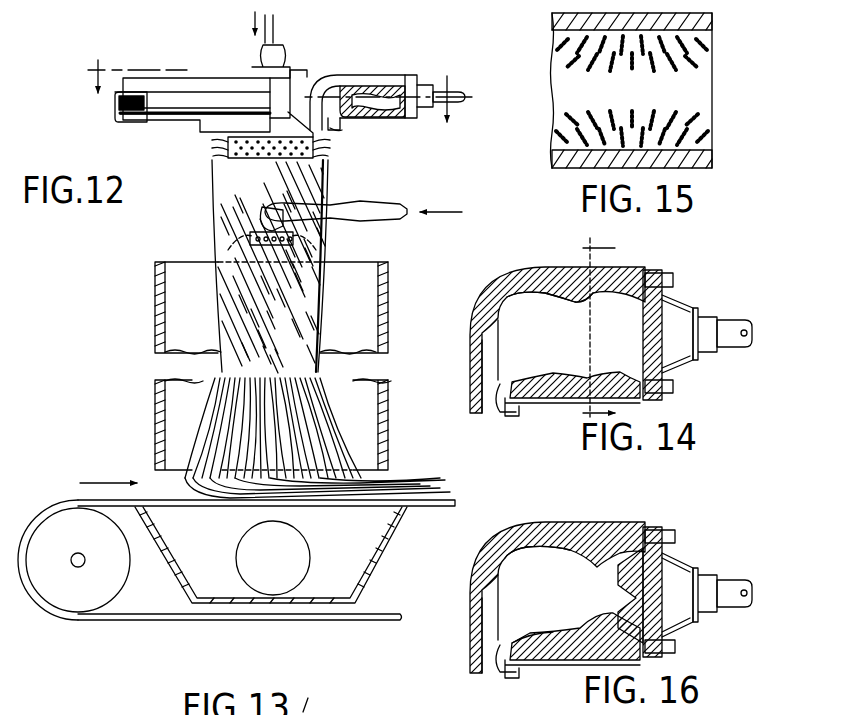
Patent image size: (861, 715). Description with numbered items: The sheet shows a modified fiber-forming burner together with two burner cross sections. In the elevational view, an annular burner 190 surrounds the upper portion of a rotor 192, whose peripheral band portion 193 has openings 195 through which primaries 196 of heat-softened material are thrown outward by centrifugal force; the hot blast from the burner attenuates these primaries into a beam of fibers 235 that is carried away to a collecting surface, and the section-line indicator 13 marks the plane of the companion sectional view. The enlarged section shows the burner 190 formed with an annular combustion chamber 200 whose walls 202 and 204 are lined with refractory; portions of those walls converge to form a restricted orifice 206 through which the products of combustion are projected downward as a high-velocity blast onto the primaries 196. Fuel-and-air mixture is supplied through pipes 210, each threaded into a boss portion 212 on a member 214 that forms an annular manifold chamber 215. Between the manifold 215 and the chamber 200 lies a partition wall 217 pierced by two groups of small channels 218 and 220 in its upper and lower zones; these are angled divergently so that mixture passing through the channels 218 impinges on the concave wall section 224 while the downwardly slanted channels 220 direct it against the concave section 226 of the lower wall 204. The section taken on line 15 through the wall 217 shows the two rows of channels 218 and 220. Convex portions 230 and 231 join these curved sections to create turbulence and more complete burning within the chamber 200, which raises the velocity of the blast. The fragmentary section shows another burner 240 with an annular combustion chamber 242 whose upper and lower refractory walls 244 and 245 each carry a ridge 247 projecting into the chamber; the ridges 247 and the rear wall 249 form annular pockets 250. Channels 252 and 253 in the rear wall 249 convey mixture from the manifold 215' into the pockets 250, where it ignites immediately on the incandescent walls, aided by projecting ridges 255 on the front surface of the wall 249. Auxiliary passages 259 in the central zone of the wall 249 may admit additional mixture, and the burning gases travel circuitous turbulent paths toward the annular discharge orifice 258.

In FIG. 12, the section line 13- 13 is at (274, 79).
In FIG. 12, the member 214 is at (246, 95).
In FIG. 14, the member 214 is at (696, 362).
In FIG. 12, the pipes 210 is at (118, 110).
In FIG. 14, the pipes 210 is at (733, 346).
In FIG. 16, the pipes 210 is at (735, 606).
In FIG. 12, the restricted passage or orifice 206 is at (328, 80).
In FIG. 14, the restricted passage or orifice 206 is at (488, 414).
In FIG. 12, the combustion chamber 200 is at (346, 94).
In FIG. 14, the combustion chamber 200 is at (563, 343).
In FIG. 12, the annular burner 190 is at (423, 62).
In FIG. 14, the annular burner 190 is at (520, 266).
In FIG. 12, the primaries 196 is at (334, 130).
In FIG. 12, the rotor 192 is at (322, 168).
In FIG. 12, the openings 195 is at (236, 160).
In FIG. 12, the peripheral band portion 193 is at (217, 204).
In FIG. 12, the beam of fibers 235 is at (321, 282).
In FIG. 15, the wall 202 is at (552, 22).
In FIG. 14, the wall 202 is at (478, 312).
In FIG. 15, the wall 204 is at (552, 160).
In FIG. 14, the wall 204 is at (510, 412).
In FIG. 15, the openings or channels 218 is at (702, 52).
In FIG. 14, the openings or channels 218 is at (680, 300).
In FIG. 15, the wall or partition 217 is at (703, 90).
In FIG. 14, the wall or partition 217 is at (645, 333).
In FIG. 15, the openings or channels 220 is at (693, 125).
In FIG. 14, the openings or channels 220 is at (690, 376).
In FIG. 14, the section line 15— 15 is at (580, 333).
In FIG. 14, the concave wall section 224 is at (655, 276).
In FIG. 14, the concave section 226 is at (655, 392).
In FIG. 14, the manifold chamber 215 is at (708, 325).
In FIG. 14, the boss portion 212 is at (716, 322).
In FIG. 14, the convex portion 230 is at (573, 299).
In FIG. 14, the convex portion 231 is at (572, 377).
In FIG. 16, the annular burner 240 is at (627, 513).
In FIG. 16, the upper refractory wall 244 is at (590, 540).
In FIG. 16, the pockets or auxiliary chambers 250 is at (655, 532).
In FIG. 16, the openings or channels 252 is at (684, 560).
In FIG. 16, the rear wall 249 is at (700, 575).
In FIG. 16, the manifold 215' is at (731, 585).
In FIG. 16, the auxiliary passages 259 is at (690, 624).
In FIG. 16, the openings or channels 253 is at (682, 648).
In FIG. 16, the lower refractory wall 245 is at (530, 652).
In FIG. 16, the gas discharge passage or orifice 258 is at (495, 668).
In FIG. 16, the annular ledge or ridge 247 is at (600, 552).
In FIG. 16, the combustion chamber 242 is at (556, 601).
In FIG. 16, the annular abutments or ridges 255 is at (636, 600).